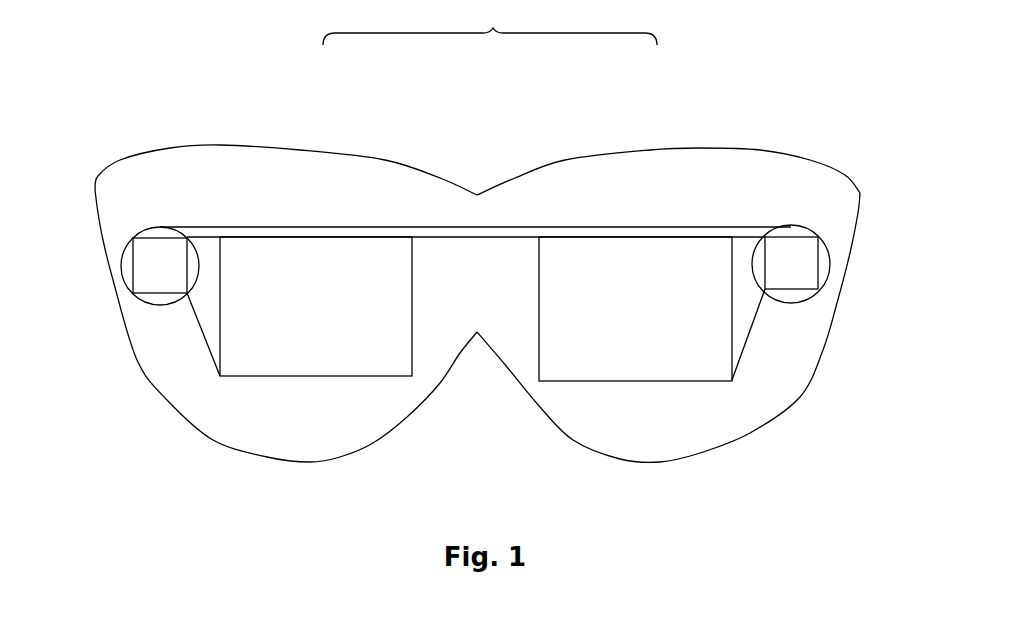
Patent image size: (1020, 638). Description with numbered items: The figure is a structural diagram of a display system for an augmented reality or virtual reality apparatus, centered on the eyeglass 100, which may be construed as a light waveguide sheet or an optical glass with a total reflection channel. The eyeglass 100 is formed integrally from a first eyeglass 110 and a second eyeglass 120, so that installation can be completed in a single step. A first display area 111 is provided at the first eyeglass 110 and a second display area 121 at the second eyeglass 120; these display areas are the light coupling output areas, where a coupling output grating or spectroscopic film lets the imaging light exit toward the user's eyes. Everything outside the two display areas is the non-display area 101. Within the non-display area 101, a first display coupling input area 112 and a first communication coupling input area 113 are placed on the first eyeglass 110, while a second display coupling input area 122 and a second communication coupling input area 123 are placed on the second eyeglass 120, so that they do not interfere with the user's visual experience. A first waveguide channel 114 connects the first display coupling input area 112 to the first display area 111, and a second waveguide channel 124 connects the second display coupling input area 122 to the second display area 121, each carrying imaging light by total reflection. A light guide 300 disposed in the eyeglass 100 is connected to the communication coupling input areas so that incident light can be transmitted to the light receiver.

The eyeglass 100 is at (490, 25).
The non-display area 101 is at (177, 185).
The first eyeglass 110 is at (315, 152).
The first display area 111 is at (290, 353).
The first display coupling input area 112 is at (167, 270).
The first communication coupling input area 113 is at (147, 232).
The first waveguide channel 114 is at (210, 318).
The second eyeglass 120 is at (657, 150).
The second display area 121 is at (677, 353).
The second display coupling input area 122 is at (793, 270).
The second communication coupling input area 123 is at (793, 233).
The second waveguide channel 124 is at (742, 310).
The light guide 300 is at (485, 230).